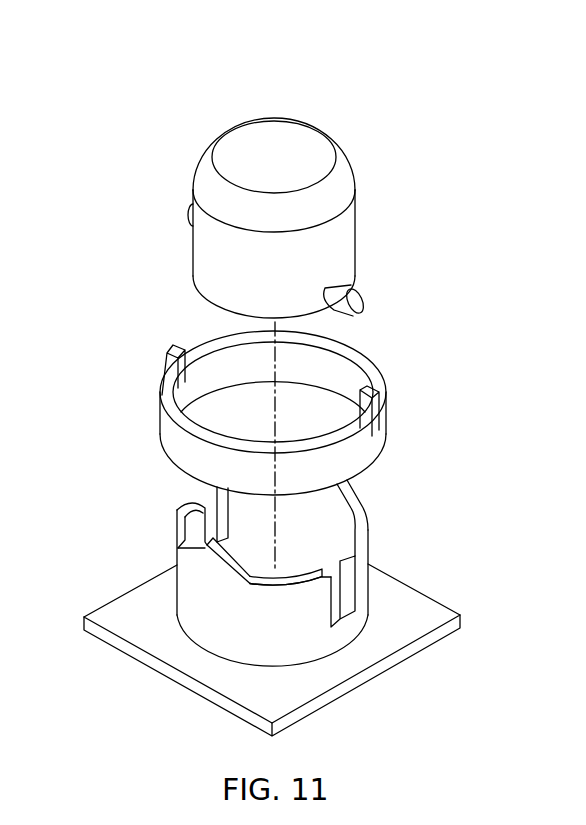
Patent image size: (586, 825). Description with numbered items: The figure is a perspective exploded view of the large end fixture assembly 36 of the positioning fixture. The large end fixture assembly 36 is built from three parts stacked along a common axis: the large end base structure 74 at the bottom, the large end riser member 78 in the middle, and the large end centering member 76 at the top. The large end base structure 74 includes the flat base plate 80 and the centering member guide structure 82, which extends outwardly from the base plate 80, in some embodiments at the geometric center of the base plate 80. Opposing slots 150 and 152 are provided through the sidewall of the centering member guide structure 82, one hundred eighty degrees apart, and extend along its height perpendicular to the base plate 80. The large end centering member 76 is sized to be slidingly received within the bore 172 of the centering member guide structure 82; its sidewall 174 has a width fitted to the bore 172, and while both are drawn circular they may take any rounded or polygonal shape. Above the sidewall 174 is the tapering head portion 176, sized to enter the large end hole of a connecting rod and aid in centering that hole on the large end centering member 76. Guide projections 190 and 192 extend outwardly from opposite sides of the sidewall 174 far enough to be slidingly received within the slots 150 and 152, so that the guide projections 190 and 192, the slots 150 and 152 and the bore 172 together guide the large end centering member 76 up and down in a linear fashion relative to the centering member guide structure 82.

The large end fixture assembly 36 is at (410, 160).
The large end centering member 76 is at (372, 225).
The tapering head portion 176 is at (232, 152).
The sidewall 174 is at (207, 278).
The guide projection 190 is at (190, 217).
The guide projection 192 is at (363, 300).
The large end riser member 78 is at (135, 388).
The large end base structure 74 is at (400, 533).
The centering member guide structure 82 is at (372, 497).
The slot 150 is at (220, 527).
The slot 152 is at (344, 598).
The bore 172 is at (247, 562).
The base plate 80 is at (298, 712).